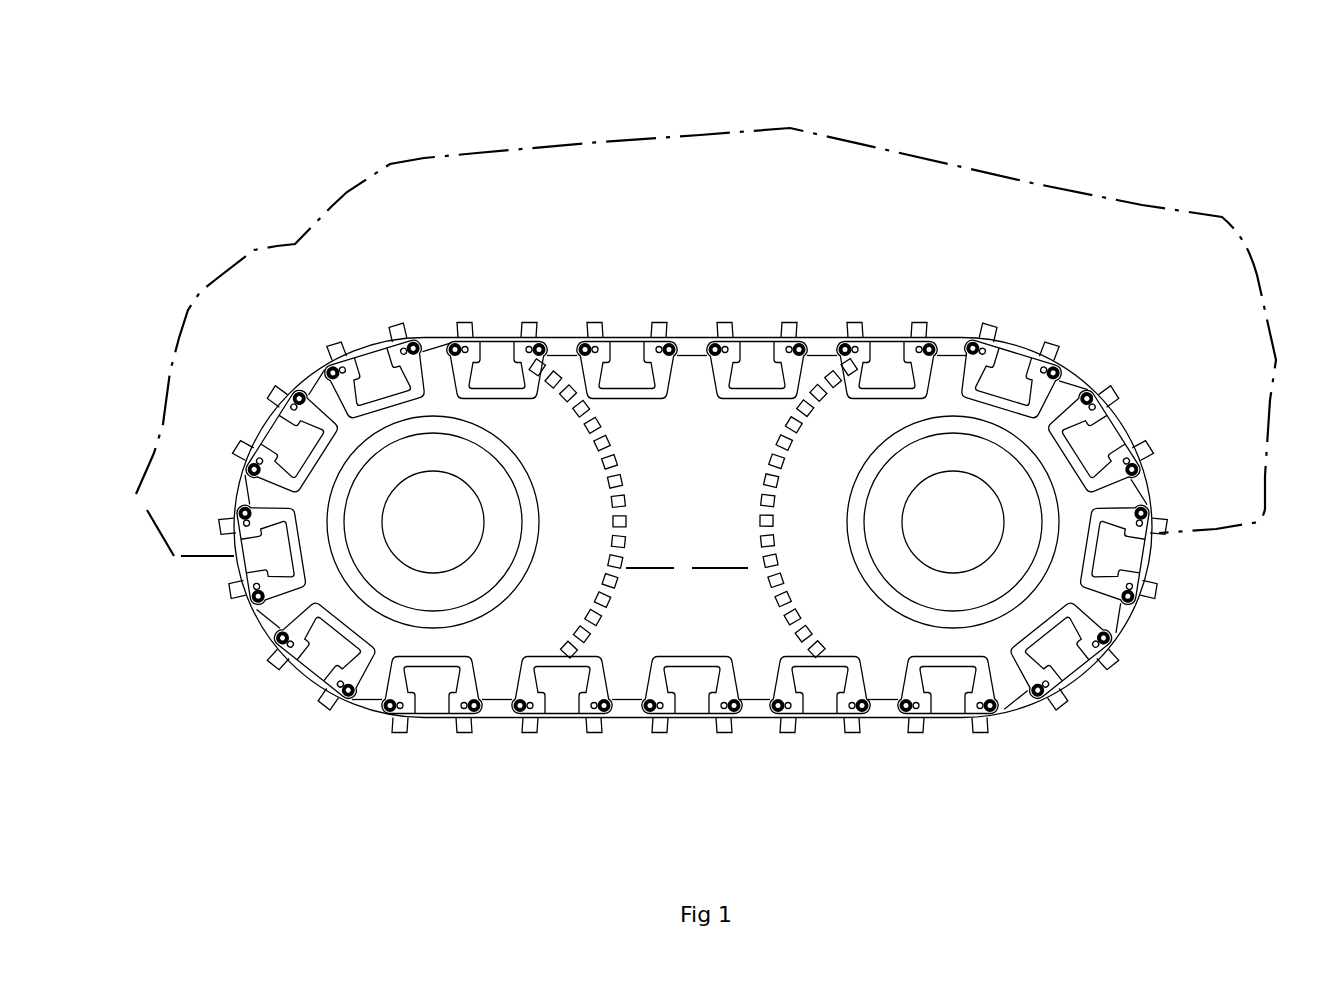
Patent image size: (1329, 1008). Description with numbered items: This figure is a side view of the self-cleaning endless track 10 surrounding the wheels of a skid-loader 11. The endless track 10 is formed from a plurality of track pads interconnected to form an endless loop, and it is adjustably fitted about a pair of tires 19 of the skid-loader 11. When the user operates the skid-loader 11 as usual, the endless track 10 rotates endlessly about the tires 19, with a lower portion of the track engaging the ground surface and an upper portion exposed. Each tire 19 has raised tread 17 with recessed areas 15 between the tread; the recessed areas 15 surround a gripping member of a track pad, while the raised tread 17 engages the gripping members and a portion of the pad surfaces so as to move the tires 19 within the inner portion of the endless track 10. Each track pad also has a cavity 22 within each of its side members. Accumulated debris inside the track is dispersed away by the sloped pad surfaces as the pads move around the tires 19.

The self-cleaning endless track 10 is at (759, 531).
The skid-loader 11 is at (1028, 173).
The recessed areas 15 is at (770, 452).
The raised tread 17 is at (762, 584).
The tires 19 is at (556, 590).
The cavity 22 is at (946, 680).